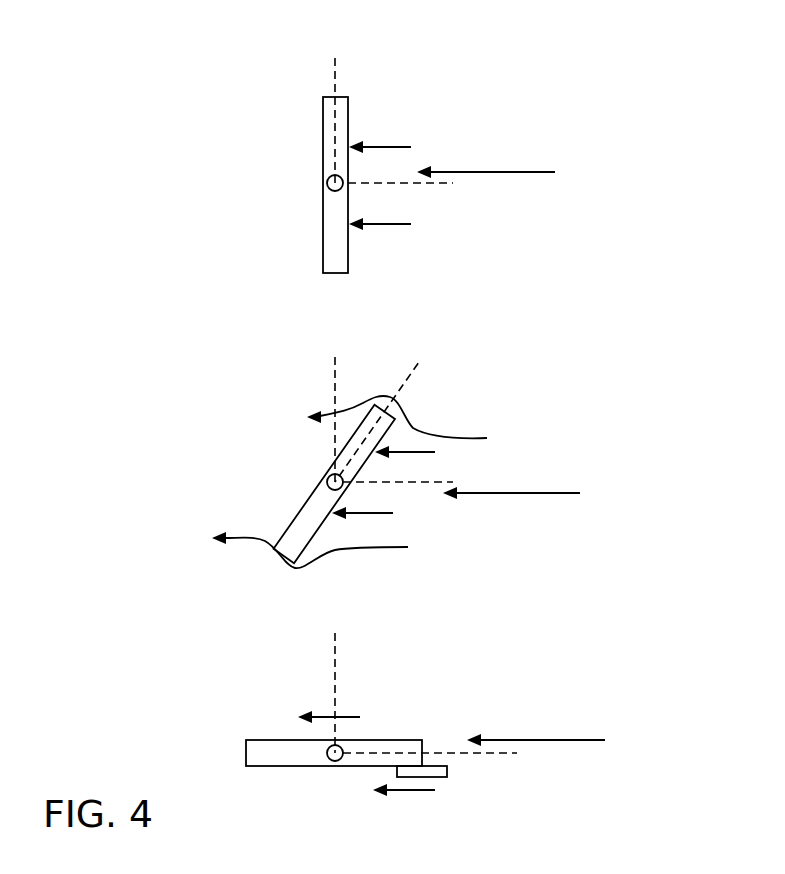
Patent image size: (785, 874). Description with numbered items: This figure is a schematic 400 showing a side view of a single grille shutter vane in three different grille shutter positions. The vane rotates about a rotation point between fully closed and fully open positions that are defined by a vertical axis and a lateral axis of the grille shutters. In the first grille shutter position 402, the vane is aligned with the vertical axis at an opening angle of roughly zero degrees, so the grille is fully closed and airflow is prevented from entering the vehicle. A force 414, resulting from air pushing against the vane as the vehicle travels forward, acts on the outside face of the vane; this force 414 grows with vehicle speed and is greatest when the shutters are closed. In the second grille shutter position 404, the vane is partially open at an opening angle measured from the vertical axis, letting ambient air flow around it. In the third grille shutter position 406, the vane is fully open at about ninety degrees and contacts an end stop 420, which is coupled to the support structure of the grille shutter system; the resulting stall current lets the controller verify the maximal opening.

The schematic 400 is at (683, 46).
The first grille shutter position 402 is at (644, 172).
The second grille shutter position 404 is at (644, 499).
The third grille shutter position 406 is at (644, 744).
The force 414 is at (392, 144).
The end stop 420 is at (450, 772).